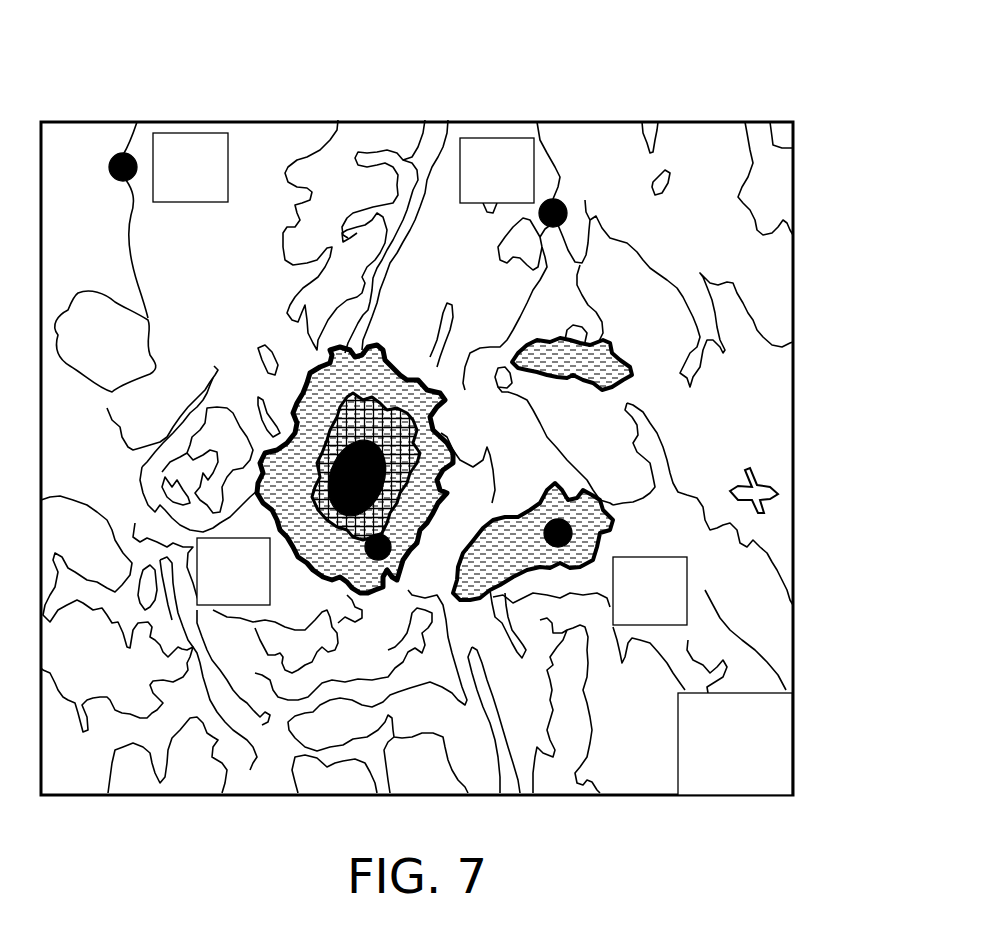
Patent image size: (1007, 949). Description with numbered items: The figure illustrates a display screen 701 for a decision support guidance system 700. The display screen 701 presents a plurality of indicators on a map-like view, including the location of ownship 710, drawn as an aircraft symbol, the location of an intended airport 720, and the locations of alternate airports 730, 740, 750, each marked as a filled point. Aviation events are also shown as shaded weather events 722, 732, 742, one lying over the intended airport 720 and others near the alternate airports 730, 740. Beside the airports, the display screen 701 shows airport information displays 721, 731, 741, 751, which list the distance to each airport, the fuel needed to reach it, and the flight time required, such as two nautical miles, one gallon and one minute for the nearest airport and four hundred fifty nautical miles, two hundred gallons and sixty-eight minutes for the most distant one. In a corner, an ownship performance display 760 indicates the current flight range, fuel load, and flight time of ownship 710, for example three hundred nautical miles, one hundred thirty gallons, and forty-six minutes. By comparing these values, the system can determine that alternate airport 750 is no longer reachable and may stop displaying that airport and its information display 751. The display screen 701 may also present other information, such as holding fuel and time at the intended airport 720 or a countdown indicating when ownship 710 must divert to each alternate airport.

The decision support guidance system 700 is at (598, 28).
The display screen 701 is at (718, 130).
The ownship 710 is at (746, 480).
The intended airport 720 is at (608, 522).
The airport information display 721 is at (687, 590).
The weather event 722 is at (529, 512).
The alternate airport 730 is at (566, 210).
The airport information display 731 is at (521, 137).
The weather event 732 is at (560, 350).
The alternate airport 740 is at (390, 590).
The airport information display 741 is at (270, 605).
The weather event 742 is at (292, 416).
The alternate airport 750 is at (110, 160).
The airport information display 751 is at (215, 133).
The ownship performance display 760 is at (780, 702).